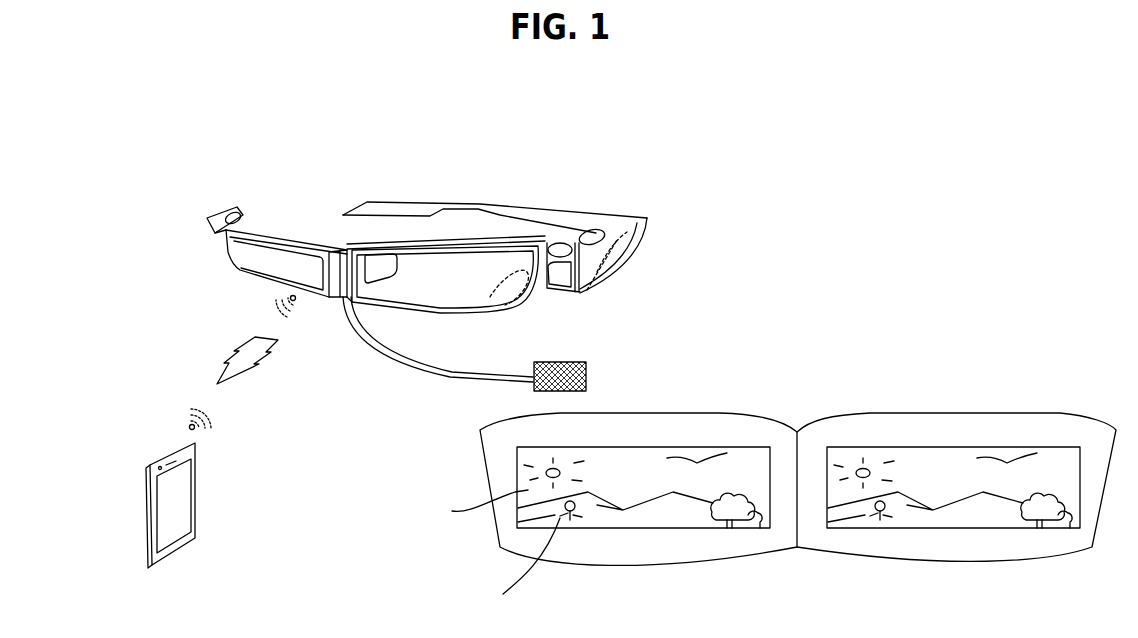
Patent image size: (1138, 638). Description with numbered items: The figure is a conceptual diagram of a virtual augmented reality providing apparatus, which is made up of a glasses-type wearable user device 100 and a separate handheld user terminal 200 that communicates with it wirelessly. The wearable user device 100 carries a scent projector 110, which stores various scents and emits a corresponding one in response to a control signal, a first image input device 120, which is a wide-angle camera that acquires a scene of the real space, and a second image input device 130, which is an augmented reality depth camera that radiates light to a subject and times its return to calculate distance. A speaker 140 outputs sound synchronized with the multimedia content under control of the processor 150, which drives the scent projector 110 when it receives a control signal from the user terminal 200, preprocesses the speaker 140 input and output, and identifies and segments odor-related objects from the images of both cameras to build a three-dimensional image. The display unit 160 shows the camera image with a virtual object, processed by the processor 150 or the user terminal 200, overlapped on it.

The wearable user device 100 is at (568, 345).
The scent projector 110 is at (588, 330).
The first image input device 120 is at (485, 203).
The second image input device 130 is at (607, 192).
The speaker 140 is at (283, 200).
The processor 150 is at (240, 271).
The display unit 160 is at (752, 417).
The user terminal 200 is at (198, 490).